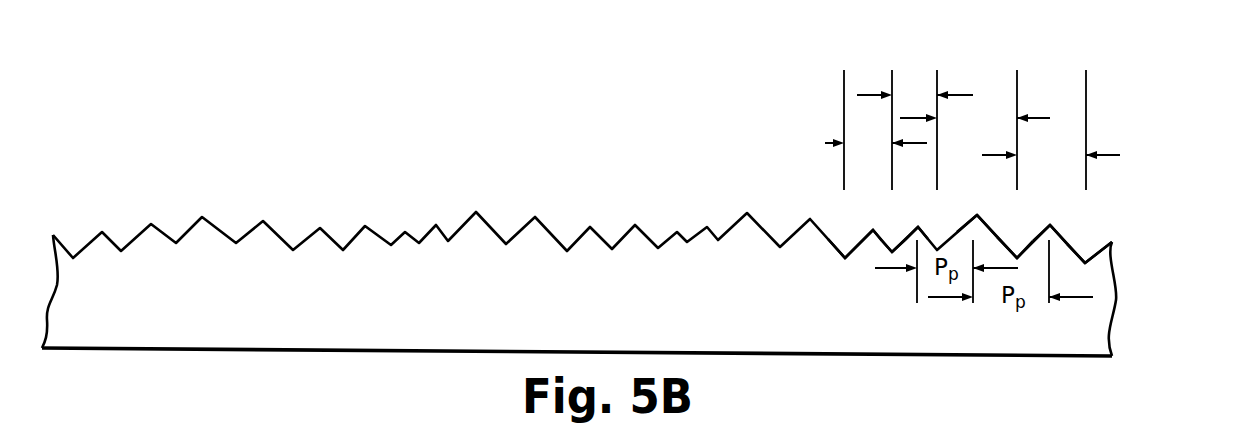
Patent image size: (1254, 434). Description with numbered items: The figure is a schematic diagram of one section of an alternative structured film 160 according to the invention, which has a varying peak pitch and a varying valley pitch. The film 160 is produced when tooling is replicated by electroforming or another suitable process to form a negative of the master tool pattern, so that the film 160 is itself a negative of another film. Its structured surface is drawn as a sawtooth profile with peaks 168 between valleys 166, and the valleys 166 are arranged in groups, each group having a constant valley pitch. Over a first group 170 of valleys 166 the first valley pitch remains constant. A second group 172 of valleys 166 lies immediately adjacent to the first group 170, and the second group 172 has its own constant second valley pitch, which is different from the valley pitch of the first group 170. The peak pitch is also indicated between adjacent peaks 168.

The structured film 160 is at (240, 200).
The valleys 166 is at (845, 258).
The groove peak 168 is at (917, 229).
The first group of valleys 170 is at (937, 62).
The second group of valleys 172 is at (1086, 62).